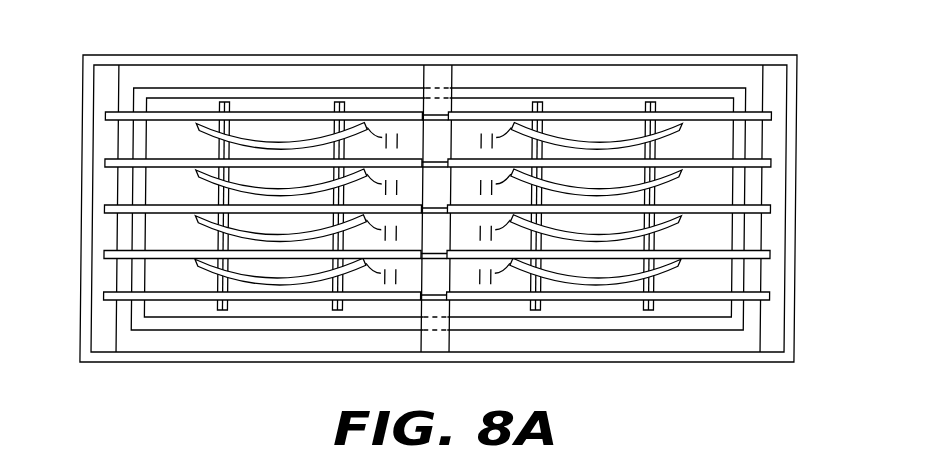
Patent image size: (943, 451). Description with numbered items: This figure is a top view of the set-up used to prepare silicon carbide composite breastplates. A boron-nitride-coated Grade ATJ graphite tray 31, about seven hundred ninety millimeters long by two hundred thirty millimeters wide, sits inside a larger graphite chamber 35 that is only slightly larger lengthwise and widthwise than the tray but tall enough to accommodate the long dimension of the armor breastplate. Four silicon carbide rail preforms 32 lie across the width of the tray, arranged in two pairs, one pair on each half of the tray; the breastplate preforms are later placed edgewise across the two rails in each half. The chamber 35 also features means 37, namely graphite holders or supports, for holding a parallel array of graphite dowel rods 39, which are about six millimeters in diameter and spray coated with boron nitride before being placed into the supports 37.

The graphite tray 31 is at (185, 93).
The silicon carbide rail preforms 32 is at (342, 95).
The graphite chamber 35 is at (690, 58).
The means for supporting dowel rods 37 is at (103, 80).
The graphite dowel rods 39 is at (107, 118).